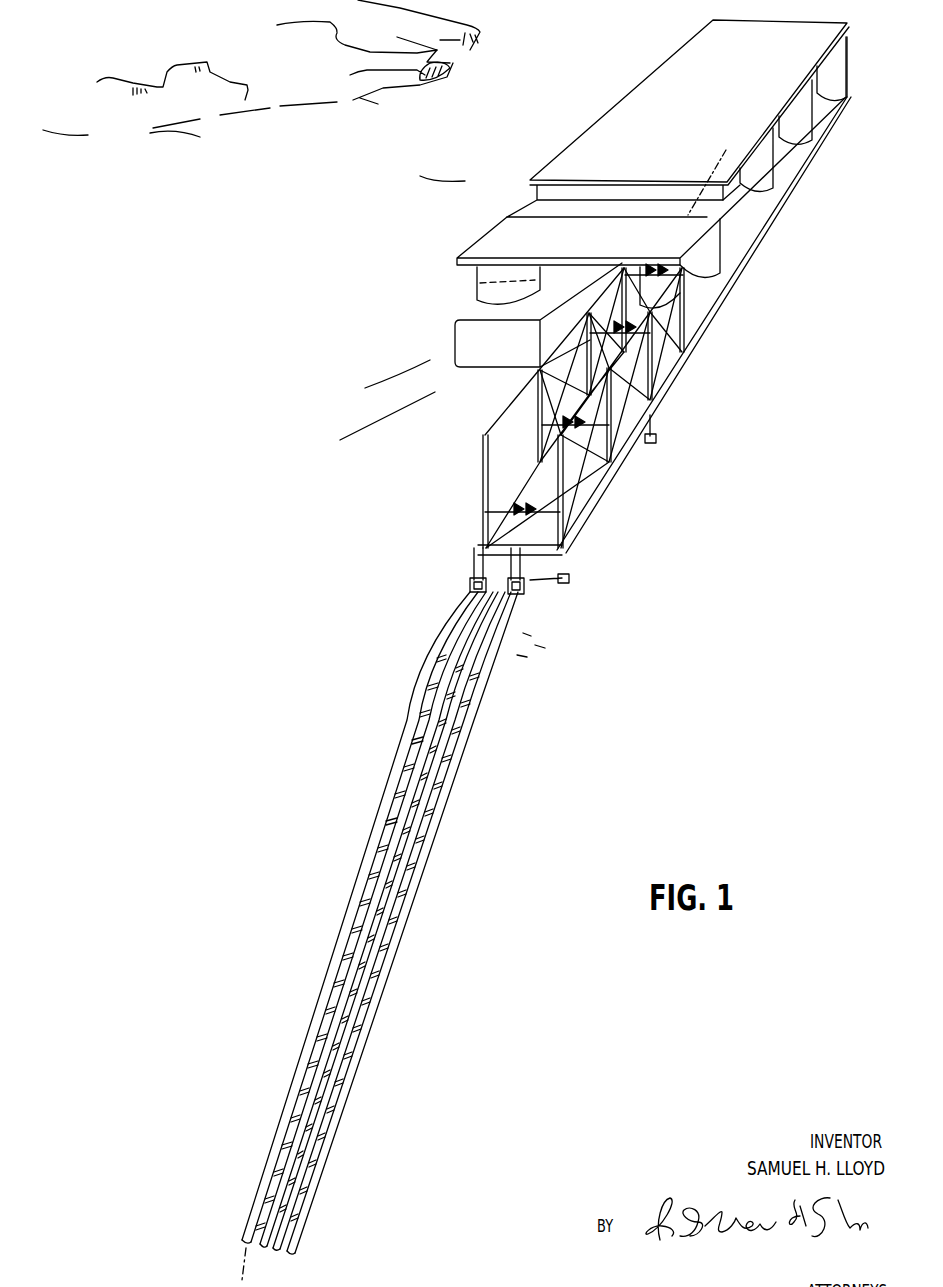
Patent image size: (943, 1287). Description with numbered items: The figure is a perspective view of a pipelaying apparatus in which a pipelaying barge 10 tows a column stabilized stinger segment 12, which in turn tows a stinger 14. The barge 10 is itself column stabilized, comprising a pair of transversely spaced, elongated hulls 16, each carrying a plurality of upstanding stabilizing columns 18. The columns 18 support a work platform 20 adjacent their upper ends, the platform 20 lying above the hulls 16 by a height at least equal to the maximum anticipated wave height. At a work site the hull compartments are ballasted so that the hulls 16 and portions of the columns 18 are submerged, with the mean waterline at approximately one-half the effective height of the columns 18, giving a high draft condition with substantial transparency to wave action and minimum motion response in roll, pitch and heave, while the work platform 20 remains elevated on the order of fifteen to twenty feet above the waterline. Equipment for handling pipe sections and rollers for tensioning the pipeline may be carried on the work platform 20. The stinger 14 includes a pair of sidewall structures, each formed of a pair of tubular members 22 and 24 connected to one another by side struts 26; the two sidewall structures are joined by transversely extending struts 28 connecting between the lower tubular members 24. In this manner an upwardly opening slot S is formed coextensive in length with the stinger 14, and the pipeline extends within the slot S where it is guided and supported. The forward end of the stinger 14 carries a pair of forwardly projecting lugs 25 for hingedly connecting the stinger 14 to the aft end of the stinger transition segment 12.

The pipelaying barge 10 is at (777, 232).
The column stabilized stinger segment 12 is at (680, 463).
The stinger 14 is at (442, 907).
The hull 16 is at (455, 355).
The stabilizing column 18 is at (762, 190).
The work platform 20 is at (563, 157).
The tubular member 22 is at (437, 780).
The lower tubular member 24 is at (437, 833).
The forwardly projecting lug 25 is at (522, 590).
The side strut 26 is at (480, 670).
The transversely extending strut 28 is at (440, 728).
The upwardly opening slot S is at (367, 930).